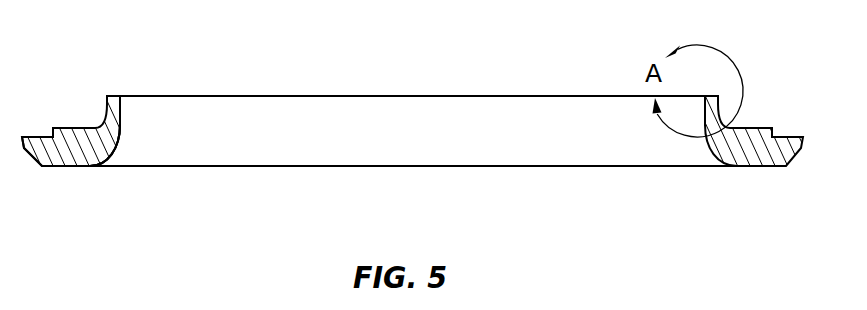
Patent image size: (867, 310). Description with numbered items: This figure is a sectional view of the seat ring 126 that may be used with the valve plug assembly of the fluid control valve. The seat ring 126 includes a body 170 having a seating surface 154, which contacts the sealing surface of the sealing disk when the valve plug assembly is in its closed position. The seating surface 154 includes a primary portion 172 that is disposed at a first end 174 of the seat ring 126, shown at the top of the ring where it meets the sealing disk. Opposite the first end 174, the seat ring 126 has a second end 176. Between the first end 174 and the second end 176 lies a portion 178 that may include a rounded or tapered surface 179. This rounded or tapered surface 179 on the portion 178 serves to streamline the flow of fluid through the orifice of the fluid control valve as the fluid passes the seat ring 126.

The seat ring 126 is at (773, 178).
The seating surface 154 is at (707, 92).
The body 170 is at (73, 142).
The primary portion 172 is at (118, 96).
The first end 174 is at (122, 115).
The second end 176 is at (70, 167).
The portion 178 is at (110, 147).
The rounded or tapered surface 179 is at (140, 173).